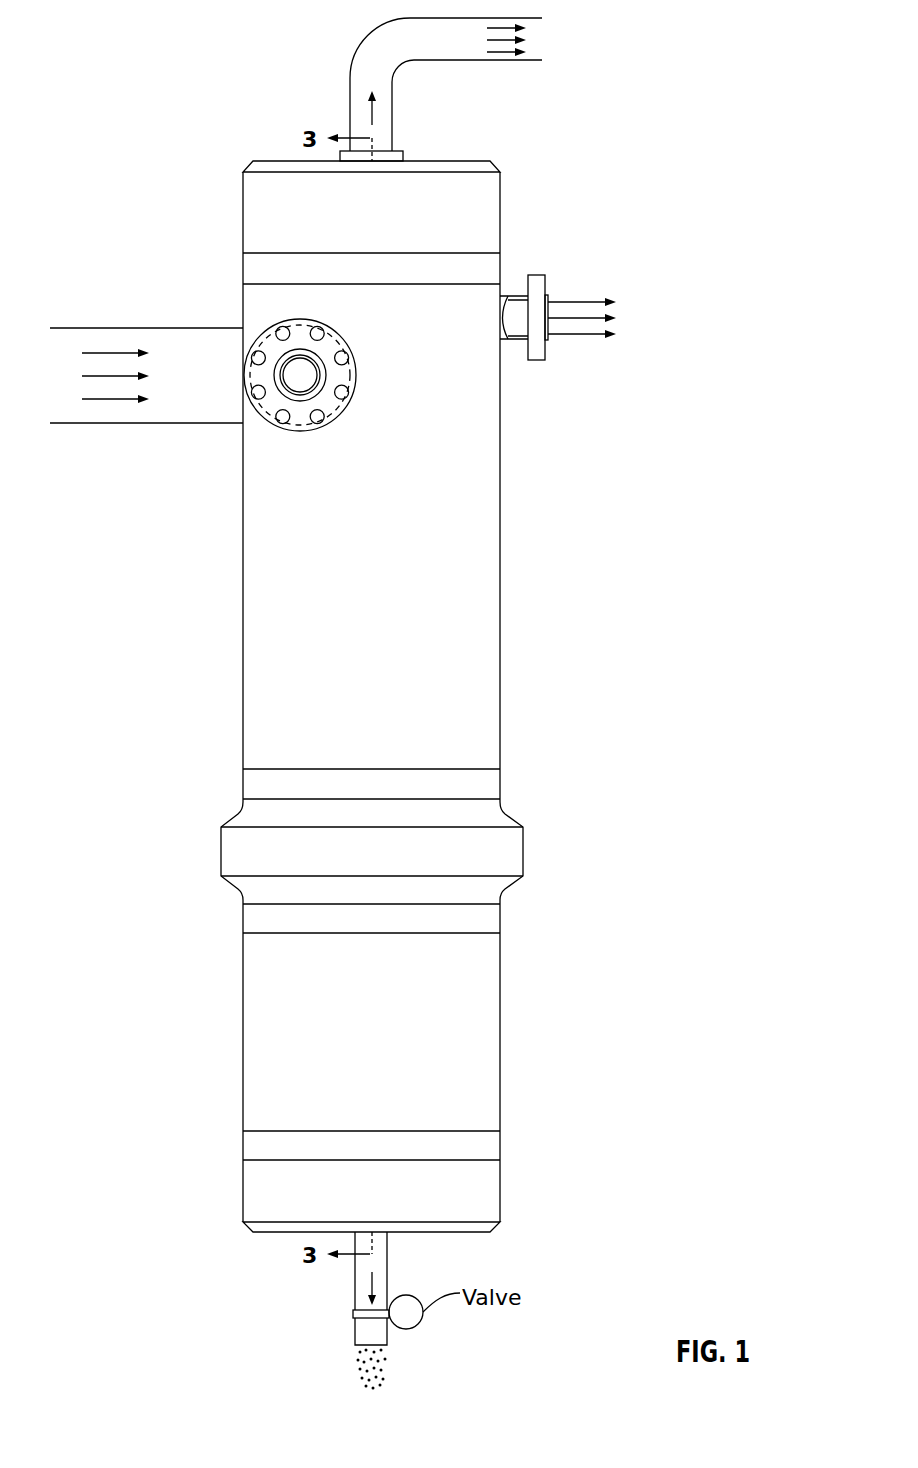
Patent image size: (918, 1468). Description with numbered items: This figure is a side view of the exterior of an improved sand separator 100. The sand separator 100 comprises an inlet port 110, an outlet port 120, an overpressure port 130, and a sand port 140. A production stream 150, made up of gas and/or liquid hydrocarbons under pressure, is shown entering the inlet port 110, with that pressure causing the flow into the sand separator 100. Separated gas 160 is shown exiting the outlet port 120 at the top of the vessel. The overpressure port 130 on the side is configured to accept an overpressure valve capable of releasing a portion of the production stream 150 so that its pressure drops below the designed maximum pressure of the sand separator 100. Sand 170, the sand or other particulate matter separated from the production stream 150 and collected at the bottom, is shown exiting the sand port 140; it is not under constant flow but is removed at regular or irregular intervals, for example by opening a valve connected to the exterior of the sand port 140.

The sand separator 100 is at (651, 39).
The inlet port 110 is at (217, 327).
The outlet port 120 is at (412, 74).
The overpressure port 130 is at (553, 294).
The sand port 140 is at (355, 1282).
The production stream 150 is at (158, 410).
The separated gas 160 is at (480, 50).
The sand 170 is at (360, 1372).